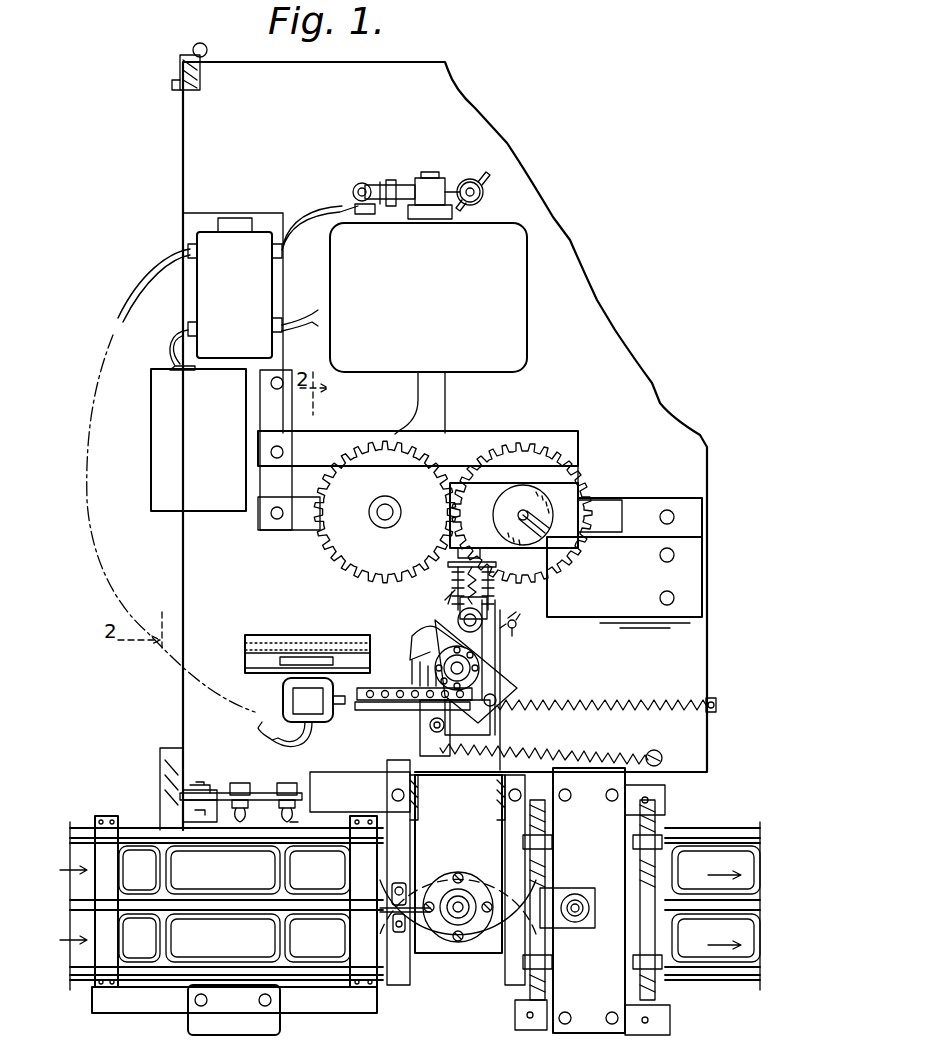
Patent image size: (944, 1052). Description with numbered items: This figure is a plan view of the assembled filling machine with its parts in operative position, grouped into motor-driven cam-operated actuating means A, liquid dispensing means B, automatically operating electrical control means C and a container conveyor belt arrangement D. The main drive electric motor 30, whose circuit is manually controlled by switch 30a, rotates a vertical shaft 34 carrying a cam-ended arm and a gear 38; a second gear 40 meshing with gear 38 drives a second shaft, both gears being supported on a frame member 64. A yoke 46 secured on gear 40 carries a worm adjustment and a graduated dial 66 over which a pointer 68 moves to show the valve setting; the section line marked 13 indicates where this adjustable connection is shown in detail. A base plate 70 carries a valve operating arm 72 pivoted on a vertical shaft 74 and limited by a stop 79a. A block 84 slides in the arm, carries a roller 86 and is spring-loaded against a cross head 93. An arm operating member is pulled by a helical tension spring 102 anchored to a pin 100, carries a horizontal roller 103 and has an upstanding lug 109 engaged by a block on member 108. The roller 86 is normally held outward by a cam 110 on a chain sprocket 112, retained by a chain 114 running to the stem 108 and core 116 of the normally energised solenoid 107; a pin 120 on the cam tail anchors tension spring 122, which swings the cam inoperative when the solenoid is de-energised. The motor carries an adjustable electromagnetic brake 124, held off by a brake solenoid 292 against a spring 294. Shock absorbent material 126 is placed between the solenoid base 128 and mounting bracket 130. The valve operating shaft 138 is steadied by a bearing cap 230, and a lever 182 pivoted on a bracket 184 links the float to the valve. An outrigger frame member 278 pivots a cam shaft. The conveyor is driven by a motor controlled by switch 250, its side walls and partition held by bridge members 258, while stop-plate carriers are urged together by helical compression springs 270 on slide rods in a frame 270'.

The main drive electric motor 30 is at (476, 295).
The switch 30a is at (240, 784).
The vertical shaft 34 is at (380, 506).
The gear 38 is at (418, 456).
The second gear 40 is at (518, 440).
The yoke 46 is at (482, 537).
The frame member 64 is at (298, 523).
The graduated dial 66 is at (500, 501).
The pointer 68 is at (548, 550).
The base plate 70 is at (695, 469).
The valve operating arm 72 is at (498, 646).
The vertical shaft 74 is at (480, 666).
The stop 79a is at (520, 629).
The block 84 is at (496, 590).
The roller 86 is at (458, 614).
The cross head 93 is at (448, 588).
The pin 100 is at (428, 743).
The helical tension spring 102 is at (588, 748).
The horizontal roller 103 is at (415, 740).
The solenoid 107 is at (283, 690).
The member 108 is at (362, 712).
The upstanding lug 109 is at (430, 722).
The cam 110 is at (500, 682).
The chain sprocket 112 is at (440, 648).
The chain 114 is at (402, 678).
The solenoid core 116 is at (360, 690).
The upstanding pin 120 is at (500, 706).
The tension spring 122 is at (660, 698).
The electromagnetic brake 124 is at (418, 182).
The shock absorbent material 126 is at (245, 650).
The solenoid base 128 is at (246, 668).
The mounting bracket 130 is at (292, 632).
The valve operating shaft 138 is at (462, 900).
The lever 182 is at (390, 896).
The bracket 184 is at (398, 935).
The bearing cap 230 is at (472, 930).
The switch 250 is at (292, 821).
The bridge members 258 is at (112, 816).
The helical compression springs 270 is at (617, 901).
The frame 270' is at (620, 903).
The outrigger frame member 278 is at (560, 894).
The brake solenoid 292 is at (358, 183).
The spring 294 is at (476, 180).
The section line 13 is at (434, 505).
The motor-driven cam-operated actuating means A is at (499, 422).
The liquid dispensing means B is at (440, 988).
The automatically operating electrical control means C is at (237, 624).
The container conveyor belt arrangement D is at (682, 829).